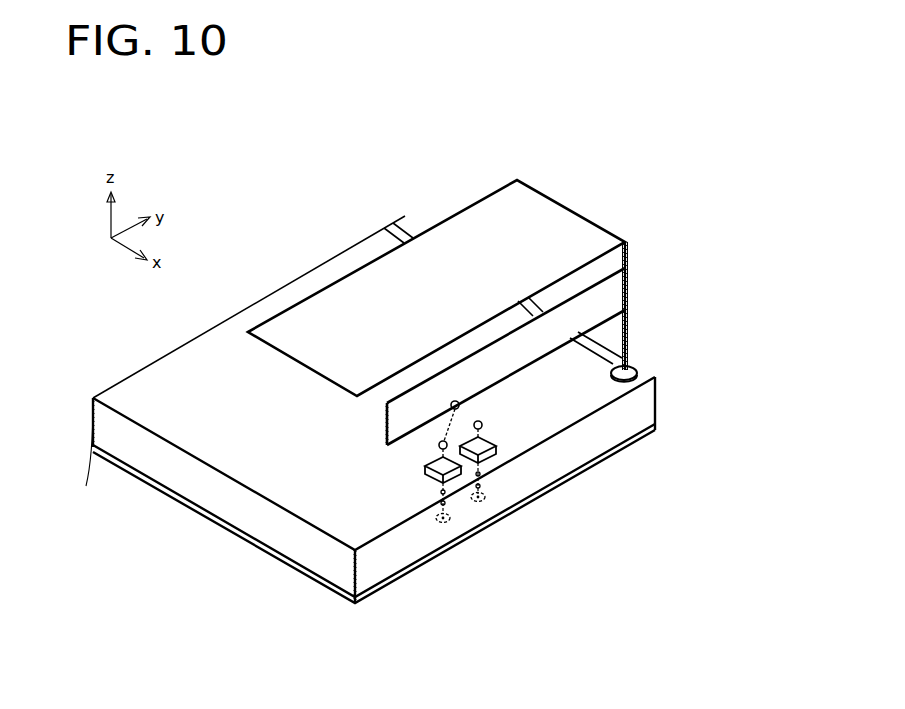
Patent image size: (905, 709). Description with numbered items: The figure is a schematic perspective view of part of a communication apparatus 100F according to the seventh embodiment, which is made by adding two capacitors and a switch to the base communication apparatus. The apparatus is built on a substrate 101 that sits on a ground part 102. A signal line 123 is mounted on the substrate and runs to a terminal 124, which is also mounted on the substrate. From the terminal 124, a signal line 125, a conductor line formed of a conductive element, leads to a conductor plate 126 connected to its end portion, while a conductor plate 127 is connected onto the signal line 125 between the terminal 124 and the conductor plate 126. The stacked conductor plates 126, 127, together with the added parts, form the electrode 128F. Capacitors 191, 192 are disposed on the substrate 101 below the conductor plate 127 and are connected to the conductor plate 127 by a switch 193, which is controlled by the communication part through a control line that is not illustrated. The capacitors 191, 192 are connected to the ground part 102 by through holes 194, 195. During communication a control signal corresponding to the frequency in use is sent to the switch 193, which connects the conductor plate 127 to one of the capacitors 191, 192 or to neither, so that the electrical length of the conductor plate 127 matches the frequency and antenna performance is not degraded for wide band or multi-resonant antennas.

The communication apparatus 100F is at (303, 188).
The substrate 101 is at (362, 577).
The ground part 102 is at (163, 496).
The signal line 123 is at (407, 229).
The terminal 124 is at (657, 352).
The signal line 125 is at (477, 406).
The conductor plate 126 is at (482, 327).
The conductor plate 127 is at (473, 350).
The electrode 128F is at (737, 125).
The capacitor 191 is at (490, 436).
The capacitor 192 is at (449, 480).
The switch 193 is at (459, 405).
The through hole 194 is at (481, 487).
The through hole 195 is at (442, 511).